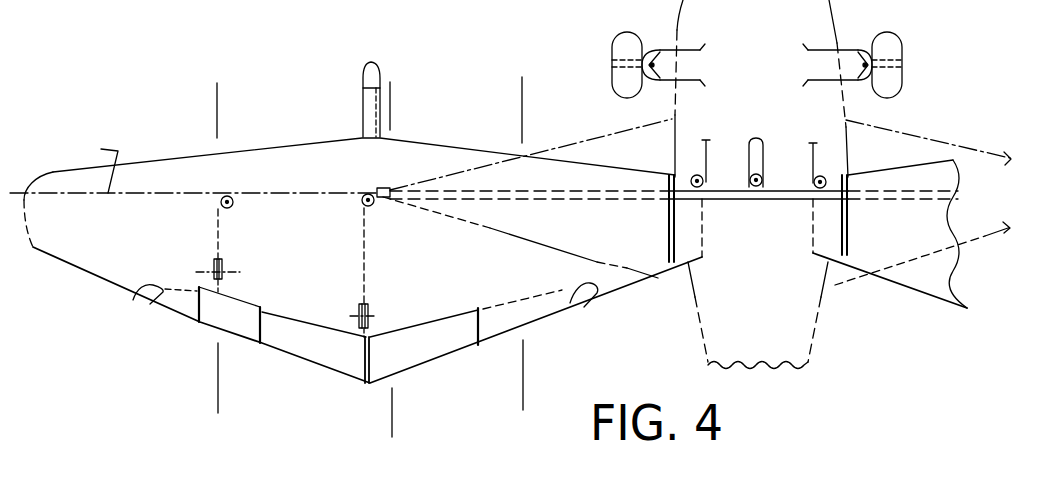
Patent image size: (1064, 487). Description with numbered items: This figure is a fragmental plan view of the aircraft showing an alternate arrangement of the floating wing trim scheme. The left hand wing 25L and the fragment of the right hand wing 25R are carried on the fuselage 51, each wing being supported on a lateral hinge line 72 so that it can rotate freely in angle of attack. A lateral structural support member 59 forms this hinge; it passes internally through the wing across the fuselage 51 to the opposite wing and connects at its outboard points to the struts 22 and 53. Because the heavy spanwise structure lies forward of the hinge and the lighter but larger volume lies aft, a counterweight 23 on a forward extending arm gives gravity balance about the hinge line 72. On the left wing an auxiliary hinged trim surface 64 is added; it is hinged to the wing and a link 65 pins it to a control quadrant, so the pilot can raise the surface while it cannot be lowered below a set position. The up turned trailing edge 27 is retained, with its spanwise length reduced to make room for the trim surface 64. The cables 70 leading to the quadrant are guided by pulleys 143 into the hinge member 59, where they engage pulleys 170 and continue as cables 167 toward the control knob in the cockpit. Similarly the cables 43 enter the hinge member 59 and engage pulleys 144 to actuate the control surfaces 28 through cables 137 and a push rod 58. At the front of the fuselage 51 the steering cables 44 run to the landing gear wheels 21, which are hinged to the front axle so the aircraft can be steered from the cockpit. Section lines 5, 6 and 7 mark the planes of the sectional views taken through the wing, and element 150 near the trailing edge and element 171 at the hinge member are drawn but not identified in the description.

The section line 5- 5 is at (376, 98).
The section line 6- 6 is at (508, 98).
The section line 7- 7 is at (203, 99).
The landing gear wheels 21 is at (620, 43).
The strut 22 is at (641, 129).
The counterweight 23 is at (374, 64).
The left hand wing 25L is at (83, 268).
The right hand wing 25R is at (928, 290).
The up turned trailing edge 27 is at (577, 302).
The control surface 28 is at (400, 375).
The cables 43 is at (702, 140).
The steering cables 44 is at (695, 45).
The fuselage 51 is at (813, 333).
The strut 53 is at (678, 285).
The push rod 58 is at (357, 343).
The lateral structural support member 59 is at (737, 199).
The auxiliary hinged trim surface 64 is at (213, 317).
The link 65 is at (224, 286).
The cable 70 is at (217, 220).
The hinge line 72 is at (95, 166).
The cables 137 is at (368, 263).
The pulleys 143 is at (233, 208).
The pulleys 144 is at (373, 208).
The leading edge member 150 is at (157, 310).
The cables 167 is at (749, 143).
The pulleys 170 is at (757, 194).
The link 171 is at (706, 186).